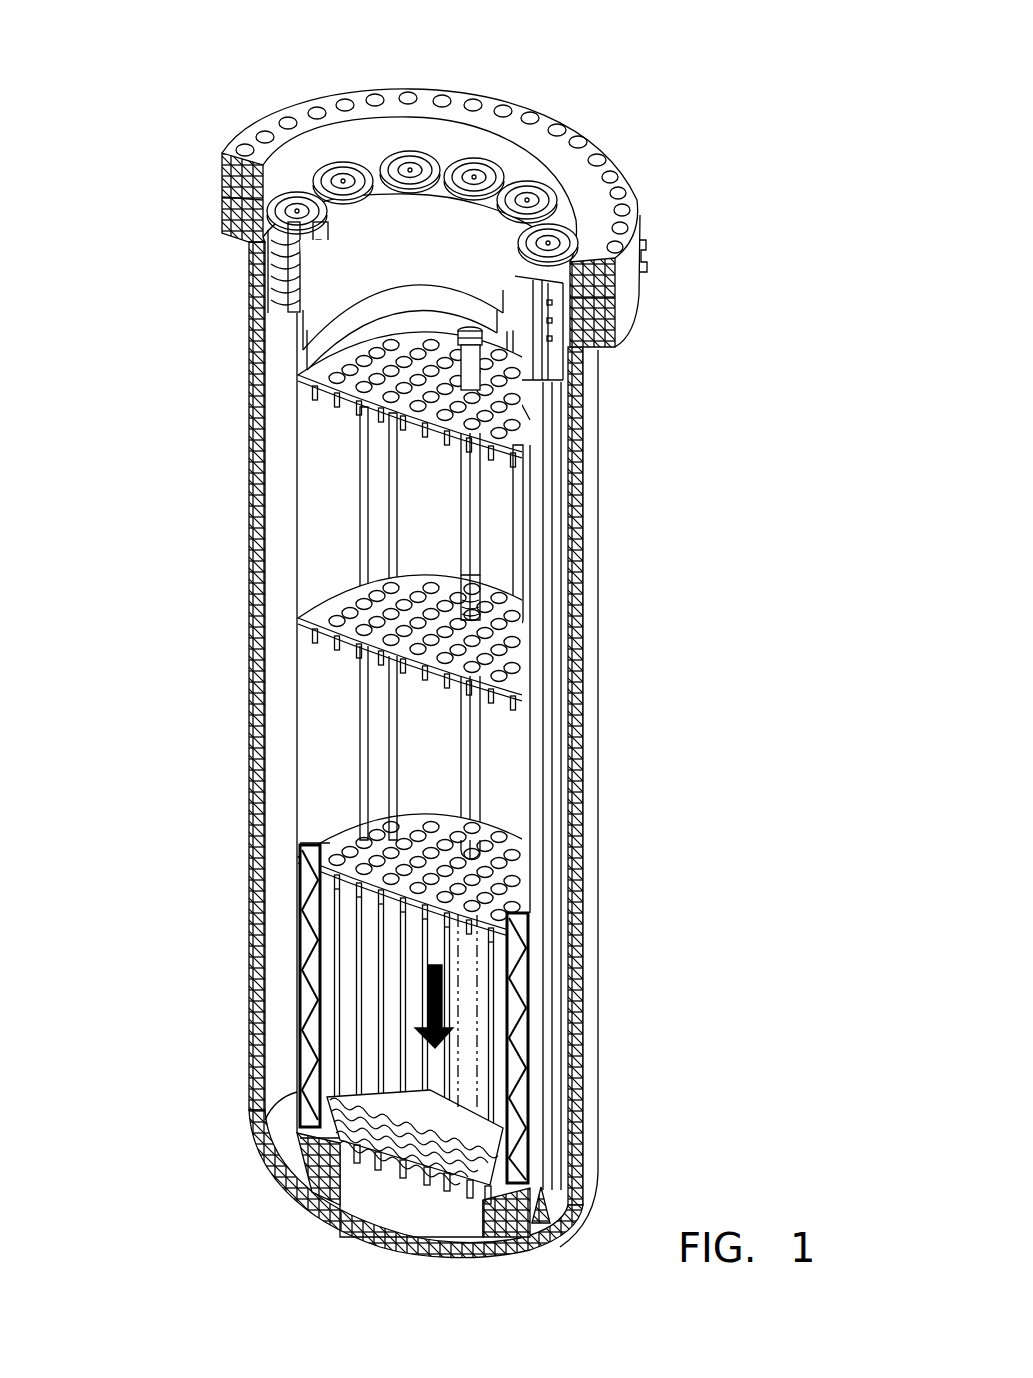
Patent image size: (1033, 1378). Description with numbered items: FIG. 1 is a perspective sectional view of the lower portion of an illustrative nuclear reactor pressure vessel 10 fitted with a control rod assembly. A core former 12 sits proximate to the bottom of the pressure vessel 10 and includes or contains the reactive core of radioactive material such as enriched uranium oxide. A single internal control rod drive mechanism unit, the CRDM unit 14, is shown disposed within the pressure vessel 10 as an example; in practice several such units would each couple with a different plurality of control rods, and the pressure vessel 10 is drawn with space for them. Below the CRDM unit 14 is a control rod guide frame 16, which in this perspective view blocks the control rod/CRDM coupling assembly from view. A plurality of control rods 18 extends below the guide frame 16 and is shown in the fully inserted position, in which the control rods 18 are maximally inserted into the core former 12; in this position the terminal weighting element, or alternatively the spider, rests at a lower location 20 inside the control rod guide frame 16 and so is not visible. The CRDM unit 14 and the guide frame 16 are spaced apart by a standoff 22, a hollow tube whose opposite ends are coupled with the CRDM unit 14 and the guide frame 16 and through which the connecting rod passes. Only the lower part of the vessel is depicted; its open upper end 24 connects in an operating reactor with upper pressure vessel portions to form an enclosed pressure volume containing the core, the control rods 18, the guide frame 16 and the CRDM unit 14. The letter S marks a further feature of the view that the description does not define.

The nuclear reactor pressure vessel 10 is at (246, 480).
The core former 12 is at (300, 843).
The control rod drive mechanism (CRDM) unit 14 is at (483, 505).
The control rod guide frame 16 is at (483, 769).
The control rods 18 is at (507, 1000).
The lower location 20 is at (493, 857).
The standoff 22 is at (517, 583).
The open upper end 24 is at (413, 247).
The sample flow path S is at (483, 988).